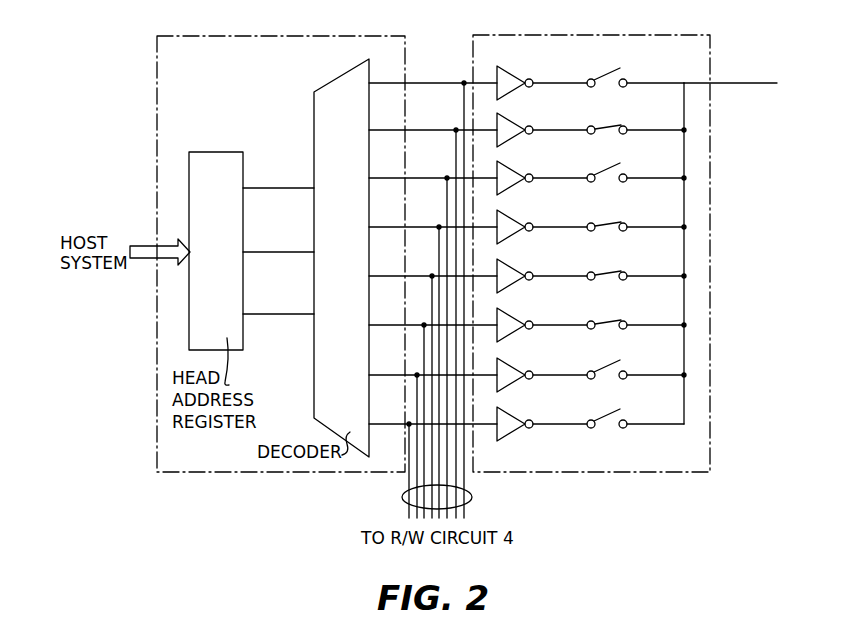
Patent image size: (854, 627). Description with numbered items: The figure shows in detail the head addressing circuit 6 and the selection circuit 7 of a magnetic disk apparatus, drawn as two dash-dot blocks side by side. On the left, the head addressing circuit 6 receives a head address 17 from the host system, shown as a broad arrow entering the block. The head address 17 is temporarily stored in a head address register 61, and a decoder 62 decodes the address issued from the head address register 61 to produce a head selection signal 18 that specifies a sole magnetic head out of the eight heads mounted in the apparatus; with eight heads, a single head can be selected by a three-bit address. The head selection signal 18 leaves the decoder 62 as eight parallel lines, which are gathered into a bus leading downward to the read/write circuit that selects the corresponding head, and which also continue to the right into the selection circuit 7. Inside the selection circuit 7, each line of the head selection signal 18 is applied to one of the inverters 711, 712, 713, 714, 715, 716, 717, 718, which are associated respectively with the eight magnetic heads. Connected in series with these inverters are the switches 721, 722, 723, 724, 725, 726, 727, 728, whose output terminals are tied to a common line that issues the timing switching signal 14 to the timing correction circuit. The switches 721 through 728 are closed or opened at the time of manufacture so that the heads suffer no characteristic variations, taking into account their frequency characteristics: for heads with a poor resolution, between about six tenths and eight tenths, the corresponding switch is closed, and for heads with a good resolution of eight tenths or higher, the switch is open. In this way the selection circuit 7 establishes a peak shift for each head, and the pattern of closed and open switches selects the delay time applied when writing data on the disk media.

The head addressing circuit 6 is at (351, 35).
The selection circuit 7 is at (573, 34).
The timing switching signal 14 is at (752, 58).
The head address 17 is at (157, 282).
The head selection signal 18 is at (449, 60).
The head address register 61 is at (224, 284).
The decoder 62 is at (350, 282).
The inverter 711 is at (531, 62).
The inverter 712 is at (509, 120).
The inverter 713 is at (509, 168).
The inverter 714 is at (509, 217).
The inverter 715 is at (509, 266).
The inverter 716 is at (509, 315).
The inverter 717 is at (509, 365).
The inverter 718 is at (511, 414).
The switch 721 is at (598, 76).
The switch 722 is at (613, 120).
The switch 723 is at (613, 168).
The switch 724 is at (613, 217).
The switch 725 is at (613, 266).
The switch 726 is at (613, 315).
The switch 727 is at (613, 365).
The switch 728 is at (615, 414).